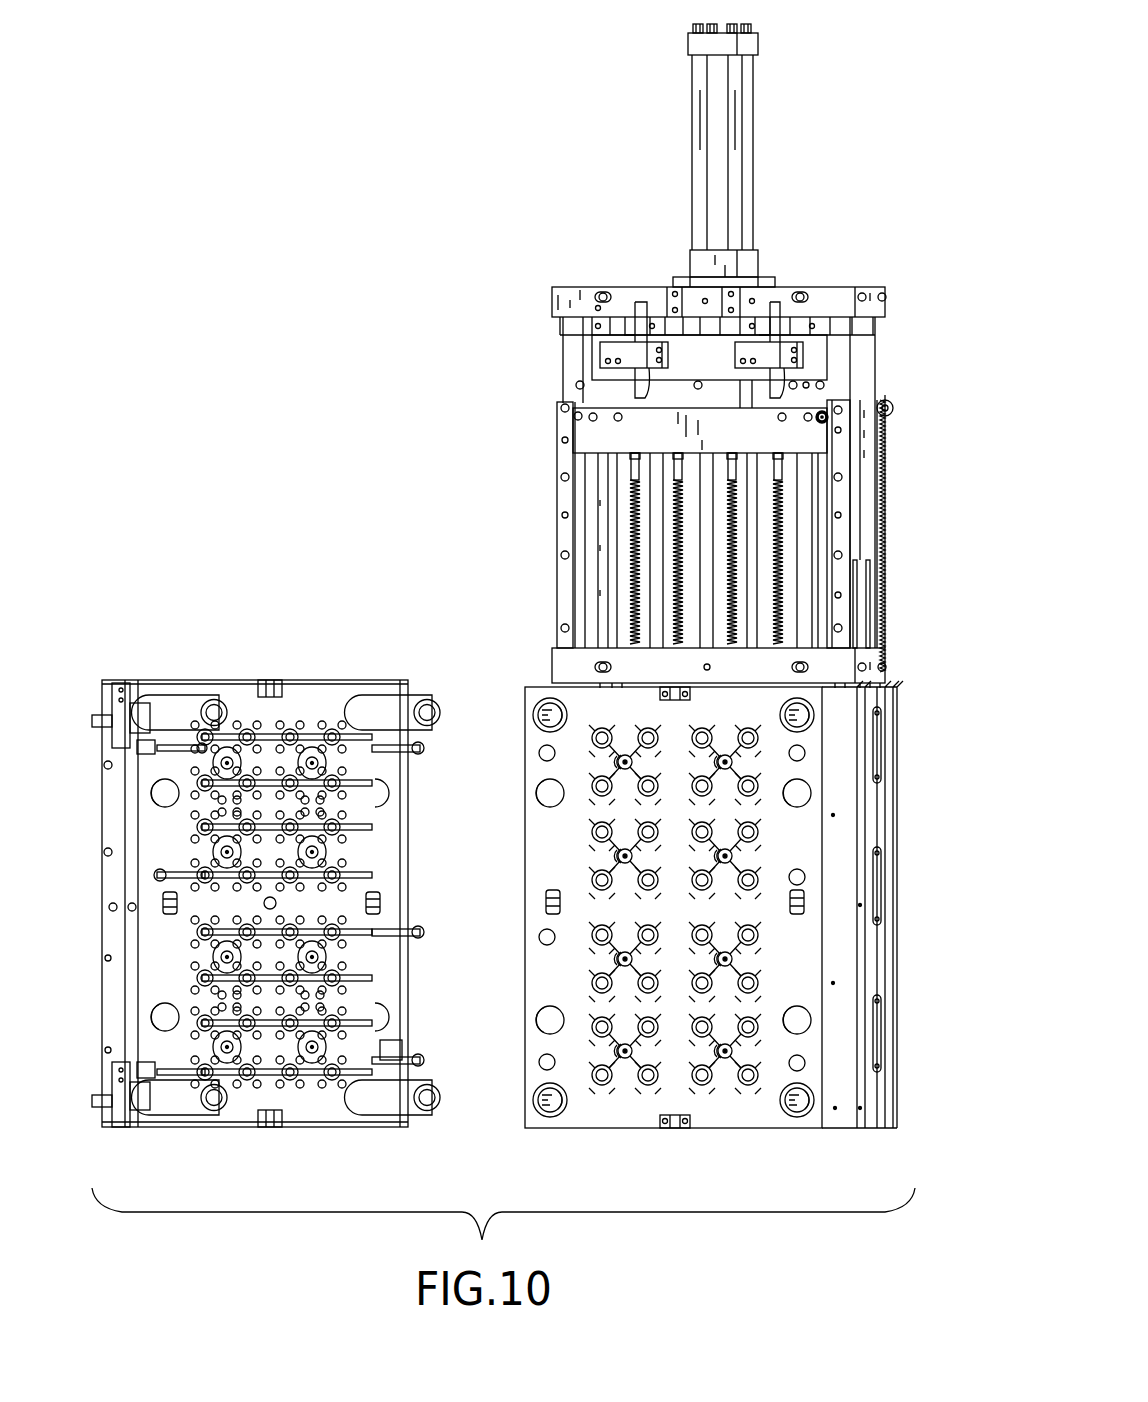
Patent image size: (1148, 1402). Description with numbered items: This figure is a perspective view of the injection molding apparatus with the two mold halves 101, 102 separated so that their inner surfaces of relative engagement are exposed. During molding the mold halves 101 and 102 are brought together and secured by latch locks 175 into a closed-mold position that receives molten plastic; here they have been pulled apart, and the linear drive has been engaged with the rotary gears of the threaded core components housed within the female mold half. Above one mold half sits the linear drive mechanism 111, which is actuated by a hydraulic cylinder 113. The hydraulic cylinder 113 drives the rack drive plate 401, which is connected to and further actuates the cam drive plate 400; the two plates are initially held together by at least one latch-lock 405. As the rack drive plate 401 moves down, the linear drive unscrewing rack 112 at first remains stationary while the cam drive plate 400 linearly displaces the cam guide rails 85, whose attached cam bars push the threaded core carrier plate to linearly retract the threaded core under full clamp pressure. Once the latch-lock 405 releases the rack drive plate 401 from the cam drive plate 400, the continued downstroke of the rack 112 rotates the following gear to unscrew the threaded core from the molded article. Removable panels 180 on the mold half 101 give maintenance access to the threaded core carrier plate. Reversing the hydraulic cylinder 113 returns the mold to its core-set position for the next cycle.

The hydraulic cylinder 113 is at (717, 150).
The linear drive mechanism 111 is at (588, 287).
The latch-lock 405 is at (775, 340).
The cam drive plate 400 is at (810, 347).
The rack drive plate 401 is at (800, 400).
The linear drive unscrewing rack 112 is at (670, 507).
The cam guide rails 85 is at (603, 592).
The panels 180 is at (878, 740).
The mold half 101 is at (733, 1118).
The mold half 102 is at (318, 695).
The latch locks 175 is at (118, 710).